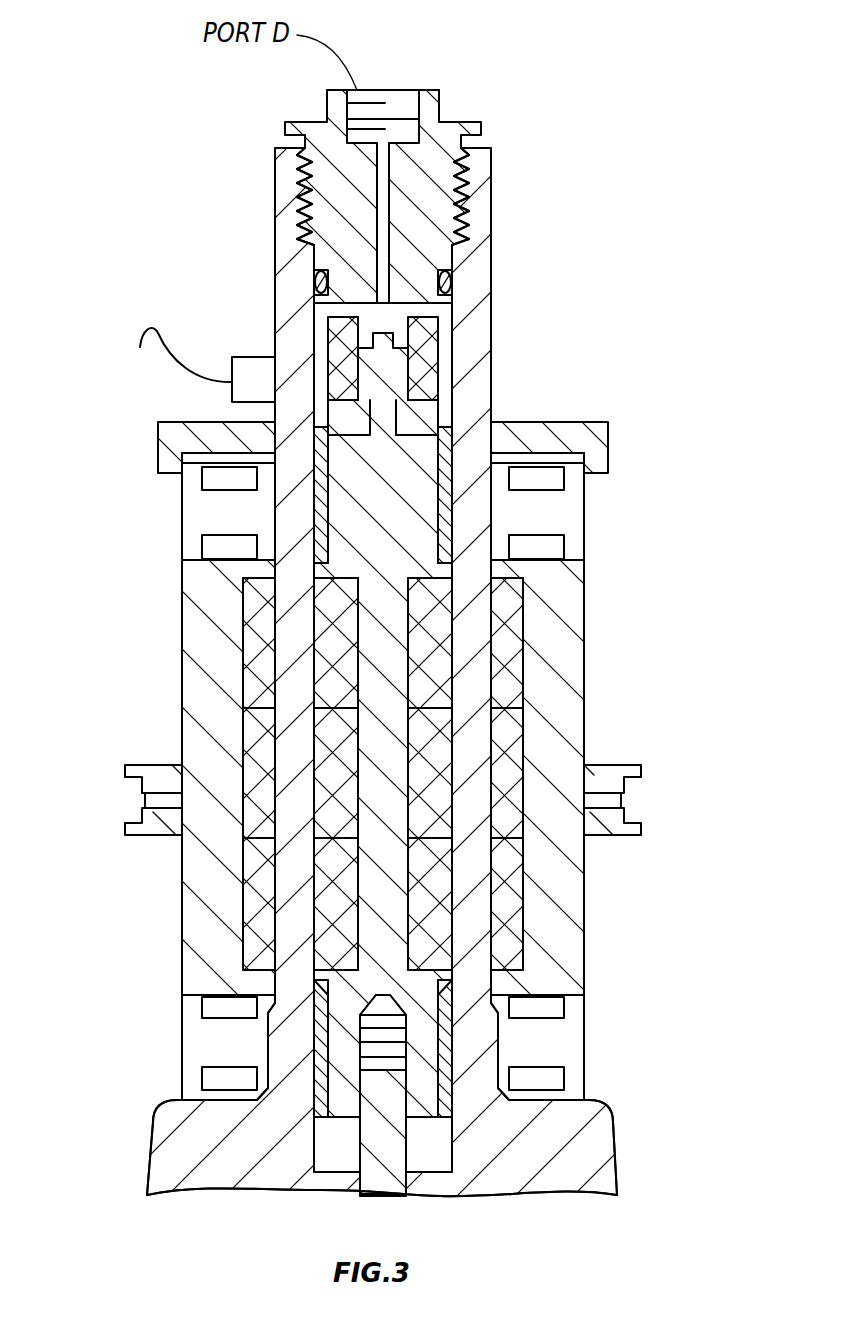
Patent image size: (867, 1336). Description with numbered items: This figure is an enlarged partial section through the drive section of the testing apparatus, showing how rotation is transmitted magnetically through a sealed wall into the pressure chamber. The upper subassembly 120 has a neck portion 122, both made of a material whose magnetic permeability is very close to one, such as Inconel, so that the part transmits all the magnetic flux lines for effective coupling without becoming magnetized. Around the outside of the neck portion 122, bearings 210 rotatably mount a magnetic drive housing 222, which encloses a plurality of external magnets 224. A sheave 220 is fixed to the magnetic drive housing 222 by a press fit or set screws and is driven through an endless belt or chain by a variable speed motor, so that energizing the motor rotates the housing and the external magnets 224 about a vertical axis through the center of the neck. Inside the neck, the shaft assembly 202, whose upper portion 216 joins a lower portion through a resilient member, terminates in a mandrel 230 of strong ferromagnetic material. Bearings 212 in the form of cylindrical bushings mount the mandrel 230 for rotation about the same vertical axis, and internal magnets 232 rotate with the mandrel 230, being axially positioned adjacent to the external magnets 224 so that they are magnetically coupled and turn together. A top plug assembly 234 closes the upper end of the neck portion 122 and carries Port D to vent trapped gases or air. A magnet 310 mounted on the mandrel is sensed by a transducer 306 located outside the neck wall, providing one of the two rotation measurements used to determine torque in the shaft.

The upper subassembly 120 is at (595, 1136).
The neck portion 122 is at (472, 277).
The shaft assembly 202 is at (398, 486).
The bearings 210 is at (192, 495).
The bearings 212 is at (313, 510).
The upper portion 216 is at (372, 1133).
The sheave 220 is at (633, 800).
The magnetic drive housing 222 is at (193, 632).
The external magnets 224 is at (513, 637).
The mandrel 230 is at (453, 463).
The internal magnets 232 is at (437, 608).
The top plug assembly 234 is at (438, 168).
The transducer 306 is at (237, 357).
The magnet 310 is at (340, 328).